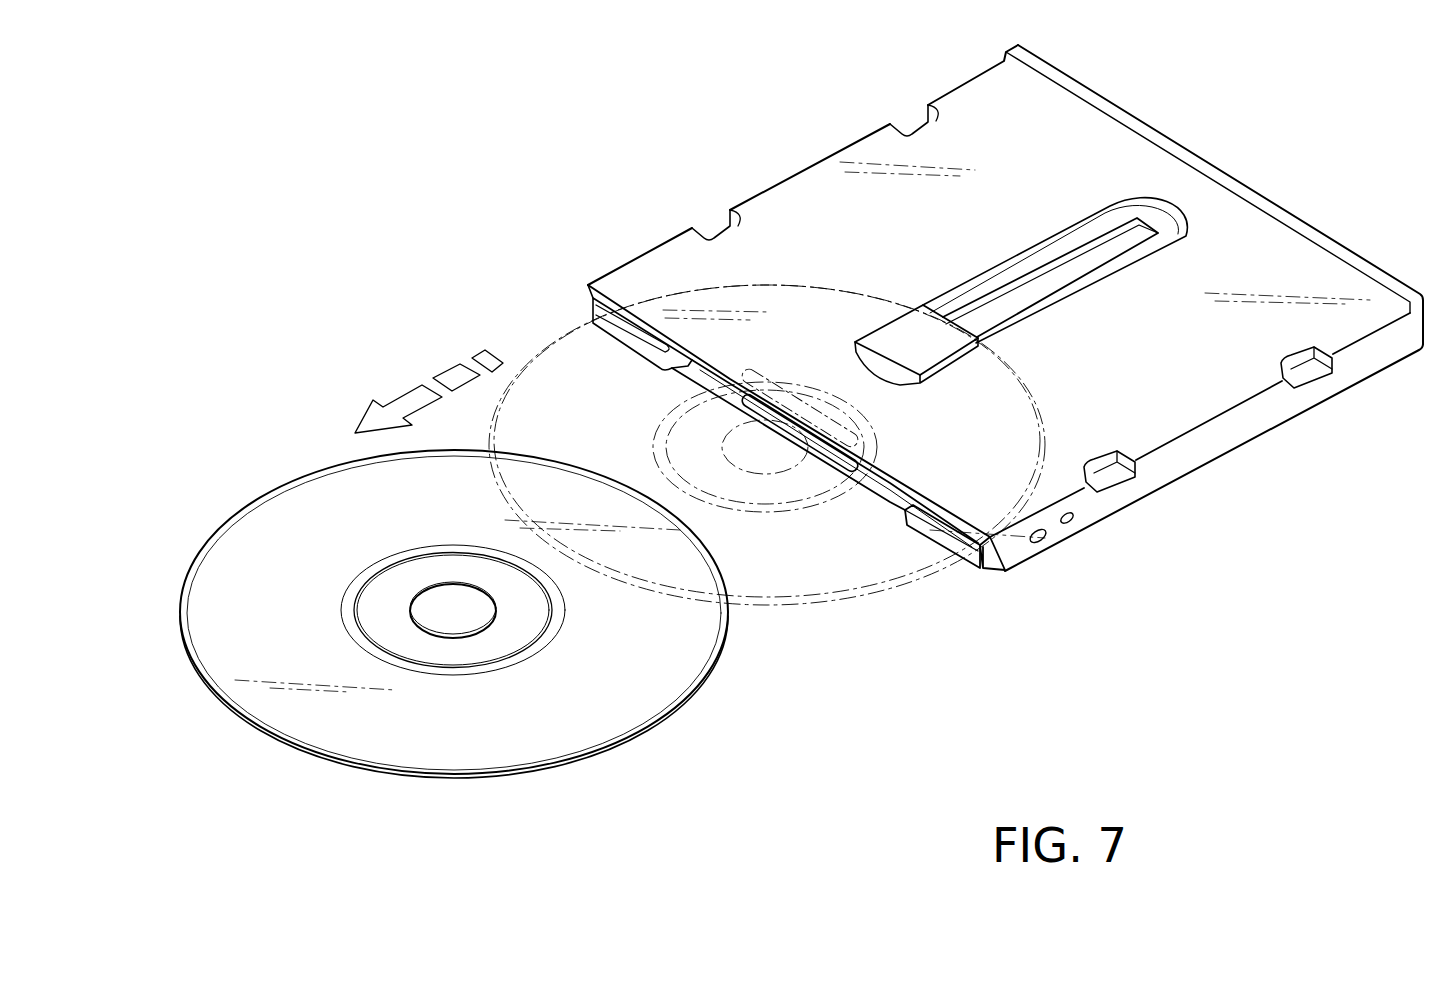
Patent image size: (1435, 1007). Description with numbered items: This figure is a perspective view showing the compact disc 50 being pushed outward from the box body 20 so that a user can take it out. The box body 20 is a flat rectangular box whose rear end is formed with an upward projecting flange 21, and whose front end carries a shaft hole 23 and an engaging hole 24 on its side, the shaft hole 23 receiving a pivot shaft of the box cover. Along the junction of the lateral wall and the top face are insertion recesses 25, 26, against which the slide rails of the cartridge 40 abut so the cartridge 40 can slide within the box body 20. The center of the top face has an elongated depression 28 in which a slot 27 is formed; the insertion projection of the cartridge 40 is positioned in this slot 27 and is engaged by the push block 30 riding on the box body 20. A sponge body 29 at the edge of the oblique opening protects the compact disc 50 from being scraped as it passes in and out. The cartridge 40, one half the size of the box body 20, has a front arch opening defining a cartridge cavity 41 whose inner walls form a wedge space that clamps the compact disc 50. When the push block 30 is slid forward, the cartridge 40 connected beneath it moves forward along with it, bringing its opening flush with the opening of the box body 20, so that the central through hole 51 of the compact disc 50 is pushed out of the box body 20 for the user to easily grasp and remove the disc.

The box body 20 is at (1257, 423).
The flange 21 is at (1313, 237).
The shaft hole 23 is at (1038, 542).
The engaging hole 24 is at (1068, 525).
The insertion recess 25 is at (1107, 477).
The insertion recess 26 is at (1310, 372).
The slot 27 is at (1127, 238).
The elongated depression 28 is at (1108, 217).
The sponge body 29 is at (843, 462).
The push block 30 is at (893, 332).
The cartridge 40 is at (990, 545).
The cartridge cavity 41 is at (942, 528).
The compact disc 50 is at (238, 540).
The central through hole 51 is at (433, 605).